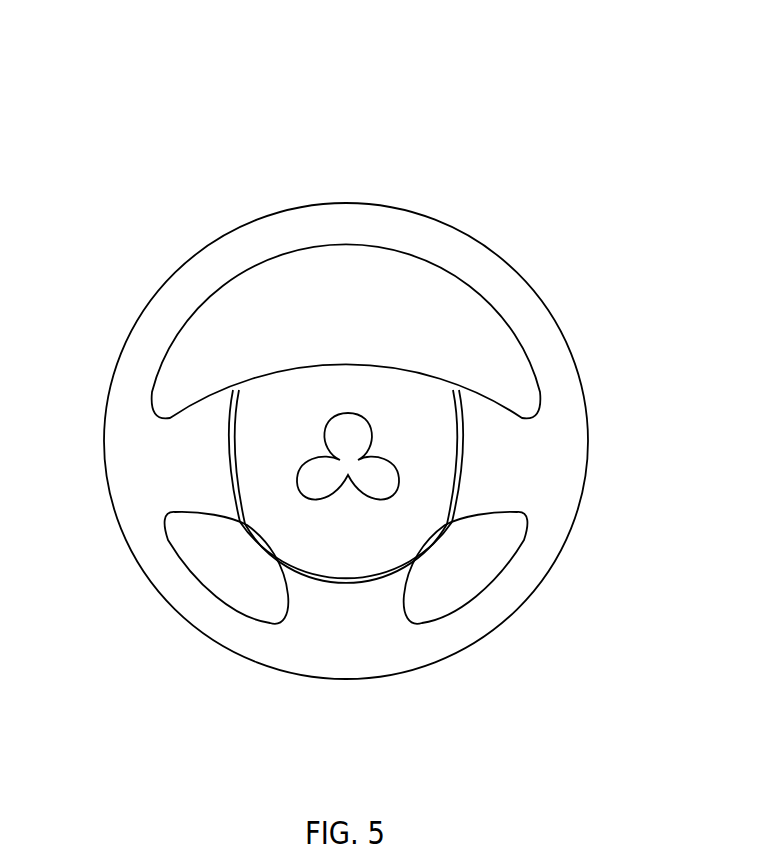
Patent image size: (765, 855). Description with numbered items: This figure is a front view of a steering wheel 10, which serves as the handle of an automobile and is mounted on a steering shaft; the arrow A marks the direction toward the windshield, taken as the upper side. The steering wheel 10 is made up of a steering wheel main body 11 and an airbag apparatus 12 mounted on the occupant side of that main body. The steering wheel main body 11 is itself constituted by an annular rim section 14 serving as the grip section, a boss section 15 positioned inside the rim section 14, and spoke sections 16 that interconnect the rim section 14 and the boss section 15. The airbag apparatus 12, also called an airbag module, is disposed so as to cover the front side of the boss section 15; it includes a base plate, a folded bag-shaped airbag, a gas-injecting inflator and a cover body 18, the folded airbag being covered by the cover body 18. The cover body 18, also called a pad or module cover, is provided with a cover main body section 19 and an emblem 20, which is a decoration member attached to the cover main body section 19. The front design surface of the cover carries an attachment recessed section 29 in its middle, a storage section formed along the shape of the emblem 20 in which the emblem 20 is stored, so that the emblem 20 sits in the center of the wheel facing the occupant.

The steering wheel 10 is at (433, 157).
The steering wheel main body 11 is at (588, 372).
The airbag apparatus 12 is at (452, 556).
The rim section 14 is at (470, 245).
The boss section 15 is at (394, 371).
The spoke sections 16 is at (197, 453).
The cover body 18 is at (287, 388).
The cover main body section 19 is at (263, 479).
The emblem 20 is at (351, 400).
The attachment recessed section 29 is at (378, 470).